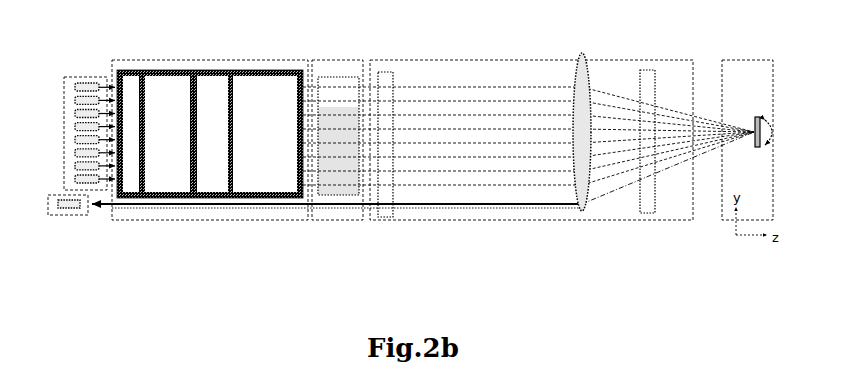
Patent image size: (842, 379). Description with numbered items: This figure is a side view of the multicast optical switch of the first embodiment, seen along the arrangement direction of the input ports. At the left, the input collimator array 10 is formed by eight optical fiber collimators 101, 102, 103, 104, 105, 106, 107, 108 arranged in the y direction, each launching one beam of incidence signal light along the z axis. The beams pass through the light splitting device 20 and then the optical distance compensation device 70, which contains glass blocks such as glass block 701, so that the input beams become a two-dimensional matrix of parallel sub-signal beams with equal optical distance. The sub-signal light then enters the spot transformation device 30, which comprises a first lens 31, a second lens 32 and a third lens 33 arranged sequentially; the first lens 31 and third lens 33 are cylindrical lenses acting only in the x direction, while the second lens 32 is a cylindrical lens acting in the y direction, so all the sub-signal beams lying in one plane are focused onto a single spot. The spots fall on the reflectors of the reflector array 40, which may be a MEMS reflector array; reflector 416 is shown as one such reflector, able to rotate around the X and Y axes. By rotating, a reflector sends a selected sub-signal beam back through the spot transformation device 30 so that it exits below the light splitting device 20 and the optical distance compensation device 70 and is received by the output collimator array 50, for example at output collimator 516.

The input collimator array 10 is at (80, 76).
The input collimator 101 is at (75, 87).
The input collimator 102 is at (75, 100).
The input collimator 103 is at (75, 114).
The input collimator 104 is at (75, 127).
The input collimator 105 is at (75, 140).
The input collimator 106 is at (75, 153).
The input collimator 107 is at (75, 166).
The input collimator 108 is at (75, 179).
The light splitting device 20 is at (207, 61).
The spot transformation device 30 is at (462, 61).
The first lens 31 is at (381, 218).
The second lens 32 is at (582, 212).
The third lens 33 is at (641, 214).
The reflector array 40 is at (741, 60).
The reflector 416 is at (762, 116).
The output collimator array 50 is at (72, 215).
The optical distance compensation device 70 is at (323, 60).
The glass block 701 is at (336, 197).
The output collimator 516 is at (50, 205).